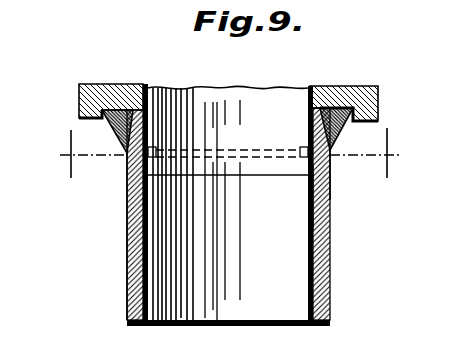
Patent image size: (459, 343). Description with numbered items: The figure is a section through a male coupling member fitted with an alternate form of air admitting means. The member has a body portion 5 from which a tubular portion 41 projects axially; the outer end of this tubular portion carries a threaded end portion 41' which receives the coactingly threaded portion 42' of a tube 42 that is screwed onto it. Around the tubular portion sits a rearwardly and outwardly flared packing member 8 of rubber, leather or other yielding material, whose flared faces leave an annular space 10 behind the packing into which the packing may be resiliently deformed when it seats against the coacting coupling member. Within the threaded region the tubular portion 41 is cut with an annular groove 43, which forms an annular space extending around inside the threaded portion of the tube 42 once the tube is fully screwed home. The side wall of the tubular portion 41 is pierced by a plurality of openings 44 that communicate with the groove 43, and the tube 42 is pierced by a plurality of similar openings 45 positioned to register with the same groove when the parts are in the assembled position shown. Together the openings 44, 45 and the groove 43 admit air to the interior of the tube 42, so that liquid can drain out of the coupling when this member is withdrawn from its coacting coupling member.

The body portion 5 is at (354, 90).
The packing member 8 is at (340, 129).
The annular space 10 is at (228, 153).
The tubular portion 41 is at (297, 152).
The threaded end portion 41' is at (288, 199).
The tube 42 is at (258, 205).
The threaded portion 42' is at (102, 236).
The annular groove 43 is at (300, 160).
The openings 44 is at (300, 152).
The openings 45 is at (127, 152).